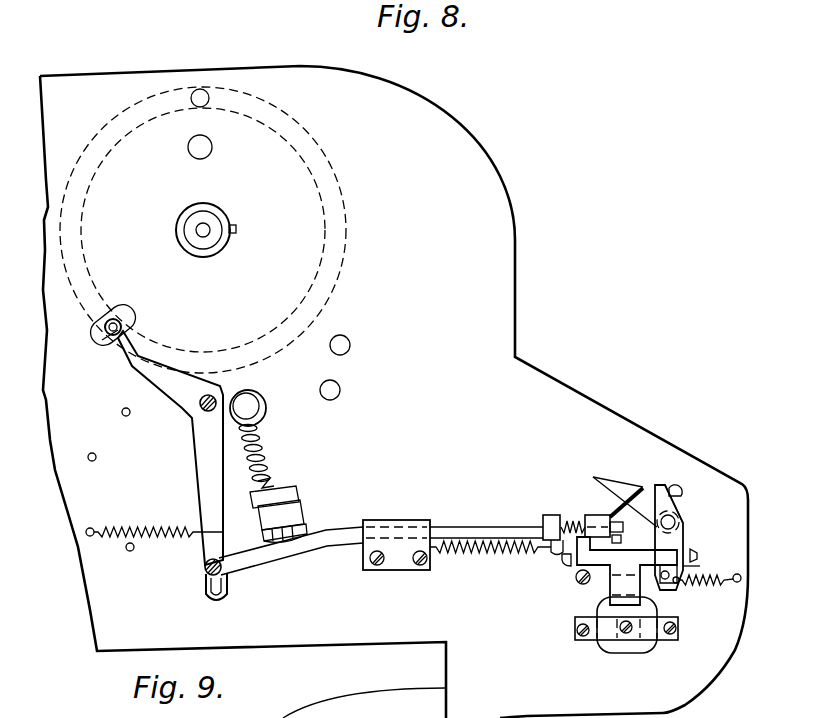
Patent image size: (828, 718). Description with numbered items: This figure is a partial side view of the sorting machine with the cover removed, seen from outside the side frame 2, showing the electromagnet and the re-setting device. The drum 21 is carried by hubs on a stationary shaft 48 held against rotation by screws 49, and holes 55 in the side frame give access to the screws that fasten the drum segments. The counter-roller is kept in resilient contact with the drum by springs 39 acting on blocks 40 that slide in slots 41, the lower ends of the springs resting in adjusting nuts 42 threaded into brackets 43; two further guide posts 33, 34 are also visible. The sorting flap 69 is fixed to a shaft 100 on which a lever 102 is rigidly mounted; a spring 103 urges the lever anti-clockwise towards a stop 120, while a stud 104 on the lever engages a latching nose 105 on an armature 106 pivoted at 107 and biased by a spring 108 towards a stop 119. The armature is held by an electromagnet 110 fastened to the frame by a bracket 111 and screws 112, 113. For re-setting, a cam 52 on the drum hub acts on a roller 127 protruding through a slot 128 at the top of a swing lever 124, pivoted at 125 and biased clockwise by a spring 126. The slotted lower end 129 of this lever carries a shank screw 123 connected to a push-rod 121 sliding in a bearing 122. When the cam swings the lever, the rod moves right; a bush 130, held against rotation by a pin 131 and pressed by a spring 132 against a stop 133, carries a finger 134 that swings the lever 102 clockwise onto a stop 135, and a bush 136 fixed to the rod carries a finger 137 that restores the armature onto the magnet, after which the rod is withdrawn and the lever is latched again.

In FIG. 8, the side frame 2 is at (388, 88).
In FIG. 8, the drum 21 is at (262, 100).
In FIG. 9, the drum 21 is at (258, 708).
In FIG. 8, the holes 55 is at (194, 136).
In FIG. 8, the stationary shaft 48 is at (210, 218).
In FIG. 8, the screws 49 is at (236, 228).
In FIG. 8, the cam 52 is at (100, 312).
In FIG. 8, the roller 127 is at (125, 313).
In FIG. 8, the slot 128 is at (102, 340).
In FIG. 8, the guide post 34 is at (350, 338).
In FIG. 8, the guide post 33 is at (340, 389).
In FIG. 8, the slots 41 is at (252, 389).
In FIG. 8, the blocks 40 is at (260, 411).
In FIG. 8, the springs 39 is at (272, 459).
In FIG. 8, the brackets 43 is at (297, 497).
In FIG. 8, the adjusting nuts 42 is at (304, 529).
In FIG. 8, the pivot 125 is at (199, 408).
In FIG. 8, the swing lever 124 is at (206, 452).
In FIG. 8, the spring 126 is at (164, 524).
In FIG. 8, the shank screw 123 is at (205, 569).
In FIG. 8, the slot 129 is at (207, 597).
In FIG. 8, the push-rod 121 is at (463, 532).
In FIG. 8, the bearing 122 is at (388, 522).
In FIG. 8, the spring 108 is at (470, 558).
In FIG. 8, the finger 137 is at (555, 550).
In FIG. 8, the bush 136 is at (547, 516).
In FIG. 8, the spring 132 is at (570, 519).
In FIG. 8, the bush 130 is at (590, 515).
In FIG. 8, the pin 131 is at (612, 541).
In FIG. 8, the finger 134 is at (625, 517).
In FIG. 8, the sorting flap 69 is at (612, 483).
In FIG. 8, the stop 135 is at (675, 490).
In FIG. 8, the stop 133 is at (678, 507).
In FIG. 8, the shaft 100 is at (680, 521).
In FIG. 8, the lever 102 is at (681, 534).
In FIG. 8, the stop 120 is at (697, 556).
In FIG. 8, the latching nose 105 is at (700, 566).
In FIG. 8, the stud 104 is at (675, 582).
In FIG. 8, the spring 103 is at (717, 583).
In FIG. 8, the stop 119 is at (568, 562).
In FIG. 8, the pivot 107 is at (576, 579).
In FIG. 8, the armature 106 is at (613, 563).
In FIG. 8, the screws 113 is at (585, 636).
In FIG. 8, the bracket 111 is at (597, 642).
In FIG. 8, the screws 112 is at (627, 633).
In FIG. 8, the electromagnet 110 is at (643, 648).